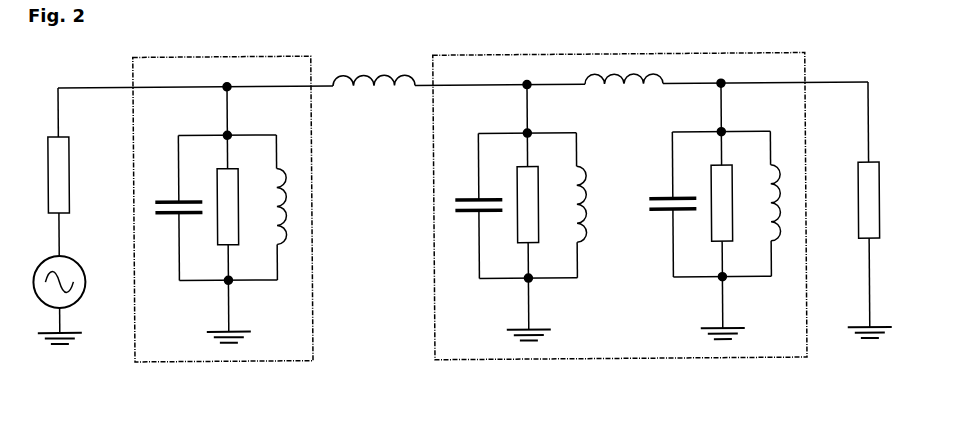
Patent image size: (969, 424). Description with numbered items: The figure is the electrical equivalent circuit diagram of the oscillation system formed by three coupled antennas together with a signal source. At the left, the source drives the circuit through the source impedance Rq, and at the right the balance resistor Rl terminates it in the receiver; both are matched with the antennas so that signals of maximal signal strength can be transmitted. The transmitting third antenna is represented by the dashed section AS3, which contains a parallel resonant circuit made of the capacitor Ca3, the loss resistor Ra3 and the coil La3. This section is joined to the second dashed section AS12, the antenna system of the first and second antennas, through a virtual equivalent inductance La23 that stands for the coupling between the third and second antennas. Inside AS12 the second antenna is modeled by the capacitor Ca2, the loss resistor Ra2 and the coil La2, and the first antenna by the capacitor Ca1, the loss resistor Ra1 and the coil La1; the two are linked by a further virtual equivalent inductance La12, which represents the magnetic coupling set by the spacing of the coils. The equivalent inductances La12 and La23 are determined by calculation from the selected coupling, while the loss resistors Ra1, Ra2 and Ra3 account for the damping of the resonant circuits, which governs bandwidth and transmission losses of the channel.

The source impedance Rq is at (73, 175).
The balance resistor Rl is at (858, 184).
The antenna system AS3 is at (223, 193).
The antenna system AS12 is at (621, 190).
The capacitor Ca3 is at (171, 207).
The loss resistor Ra3 is at (214, 207).
The coil La3 is at (264, 207).
The capacitor Ca2 is at (471, 205).
The loss resistor Ra2 is at (514, 205).
The coil La2 is at (564, 205).
The capacitor Ca1 is at (665, 204).
The loss resistor Ra1 is at (708, 204).
The coil La1 is at (758, 203).
The virtual equivalent inductance La23 is at (374, 100).
The virtual equivalent inductance La12 is at (624, 99).